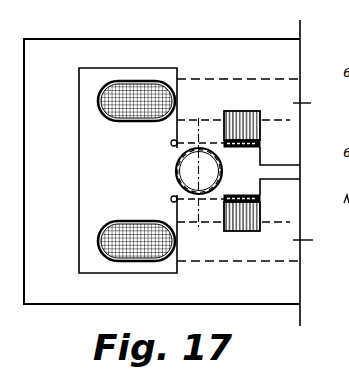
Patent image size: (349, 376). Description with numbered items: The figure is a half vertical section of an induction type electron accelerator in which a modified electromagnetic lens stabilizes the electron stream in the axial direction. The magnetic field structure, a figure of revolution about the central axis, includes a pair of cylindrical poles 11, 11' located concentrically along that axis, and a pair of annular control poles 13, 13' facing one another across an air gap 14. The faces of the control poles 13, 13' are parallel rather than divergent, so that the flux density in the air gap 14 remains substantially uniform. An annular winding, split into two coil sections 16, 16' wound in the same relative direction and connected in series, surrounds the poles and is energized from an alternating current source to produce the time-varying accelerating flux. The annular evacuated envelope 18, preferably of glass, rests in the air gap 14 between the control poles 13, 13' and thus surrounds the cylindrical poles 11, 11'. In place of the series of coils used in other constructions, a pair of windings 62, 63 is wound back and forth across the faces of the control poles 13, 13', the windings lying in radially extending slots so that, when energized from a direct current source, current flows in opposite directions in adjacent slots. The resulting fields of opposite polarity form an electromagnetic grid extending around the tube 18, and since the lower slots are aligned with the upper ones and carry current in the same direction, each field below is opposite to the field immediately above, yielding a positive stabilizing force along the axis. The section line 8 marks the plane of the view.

The section line 8- 8 is at (298, 177).
The cylindrical pole 11 is at (314, 105).
The cylindrical pole 11' is at (315, 240).
The annular control pole 13 is at (129, 119).
The annular control pole 13' is at (130, 222).
The air gap 14 is at (183, 187).
The coil section 16 is at (110, 112).
The coil section 16' is at (112, 237).
The annular evacuated envelope 18 is at (184, 122).
The winding 62 is at (171, 145).
The winding 63 is at (171, 199).